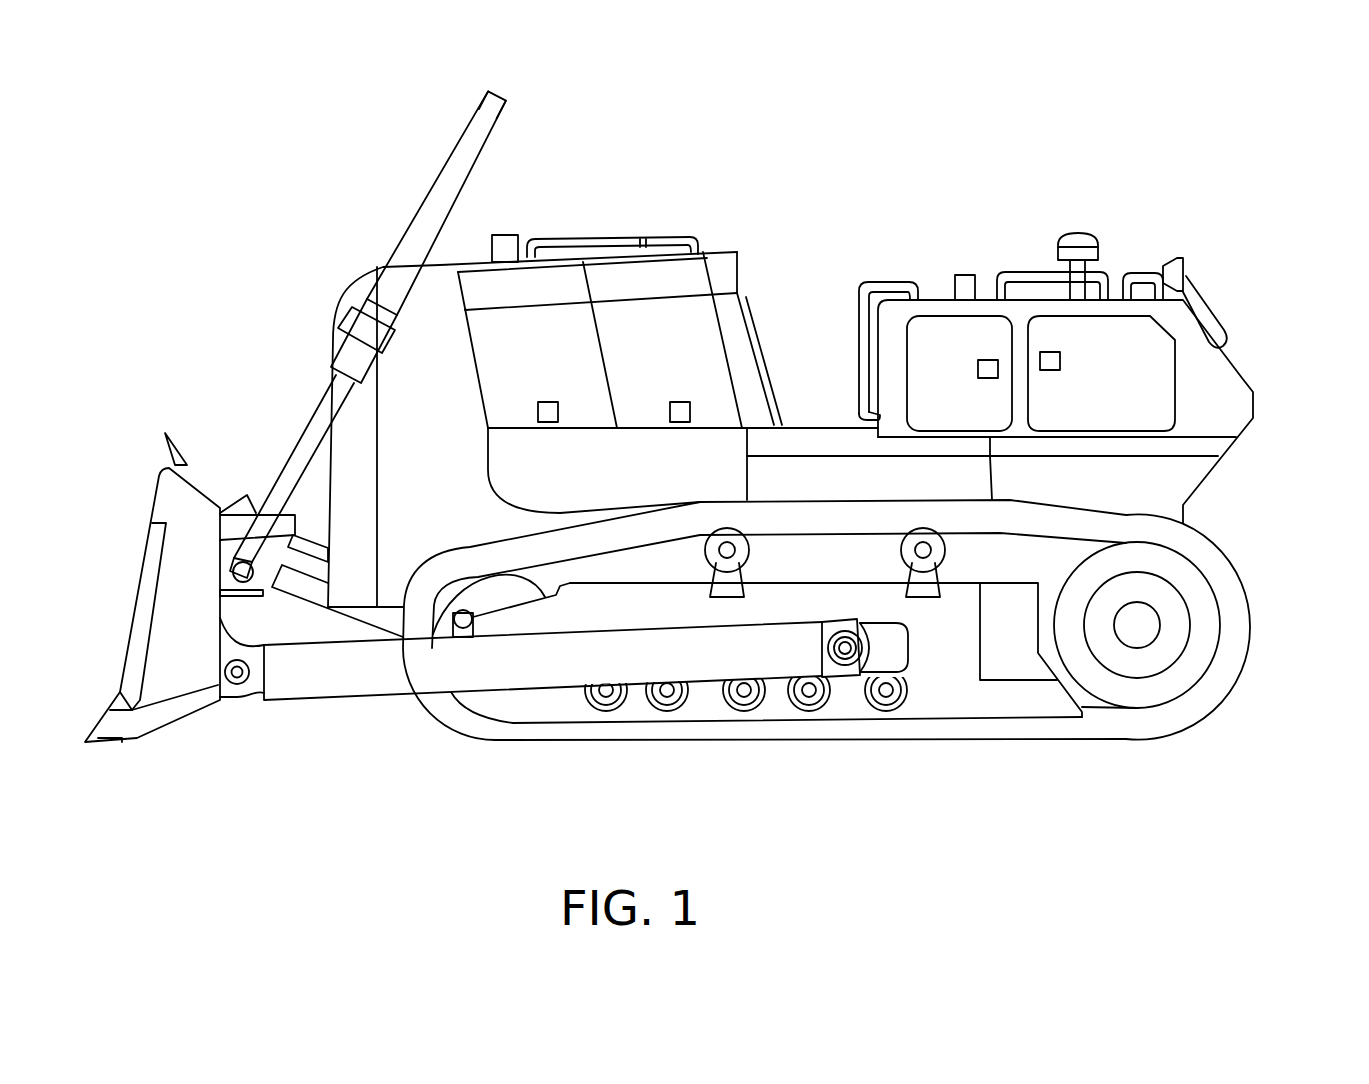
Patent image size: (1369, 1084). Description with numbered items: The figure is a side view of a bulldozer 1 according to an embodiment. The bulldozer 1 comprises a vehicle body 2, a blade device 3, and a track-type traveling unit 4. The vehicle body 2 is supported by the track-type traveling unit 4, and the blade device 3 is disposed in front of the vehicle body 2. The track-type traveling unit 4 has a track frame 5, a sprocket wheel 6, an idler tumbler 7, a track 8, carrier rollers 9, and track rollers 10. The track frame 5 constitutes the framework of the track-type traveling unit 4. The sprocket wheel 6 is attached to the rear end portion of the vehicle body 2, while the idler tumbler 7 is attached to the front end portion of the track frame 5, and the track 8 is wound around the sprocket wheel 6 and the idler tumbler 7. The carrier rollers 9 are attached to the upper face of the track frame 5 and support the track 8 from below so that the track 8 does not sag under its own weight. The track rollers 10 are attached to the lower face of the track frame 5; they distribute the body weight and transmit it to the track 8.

The bulldozer 1 is at (1225, 152).
The vehicle body 2 is at (1248, 457).
The blade device 3 is at (135, 445).
The track-type traveling unit 4 is at (445, 745).
The track frame 5 is at (947, 653).
The sprocket wheel 6 is at (1150, 640).
The idler tumbler 7 is at (480, 603).
The track 8 is at (1250, 628).
The carrier rollers 9 is at (705, 542).
The track rollers 10 is at (582, 712).